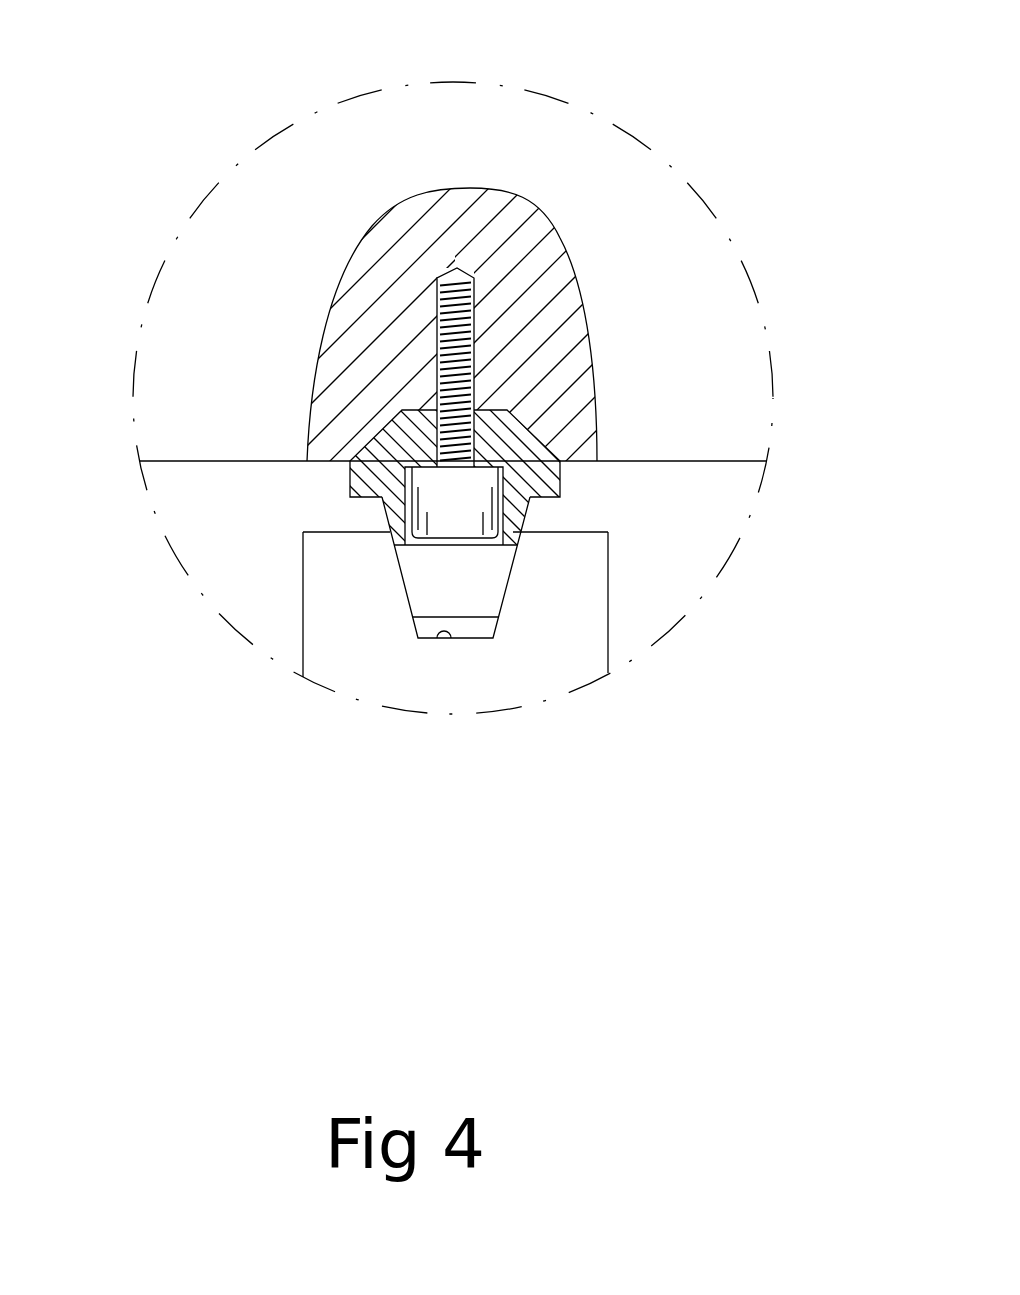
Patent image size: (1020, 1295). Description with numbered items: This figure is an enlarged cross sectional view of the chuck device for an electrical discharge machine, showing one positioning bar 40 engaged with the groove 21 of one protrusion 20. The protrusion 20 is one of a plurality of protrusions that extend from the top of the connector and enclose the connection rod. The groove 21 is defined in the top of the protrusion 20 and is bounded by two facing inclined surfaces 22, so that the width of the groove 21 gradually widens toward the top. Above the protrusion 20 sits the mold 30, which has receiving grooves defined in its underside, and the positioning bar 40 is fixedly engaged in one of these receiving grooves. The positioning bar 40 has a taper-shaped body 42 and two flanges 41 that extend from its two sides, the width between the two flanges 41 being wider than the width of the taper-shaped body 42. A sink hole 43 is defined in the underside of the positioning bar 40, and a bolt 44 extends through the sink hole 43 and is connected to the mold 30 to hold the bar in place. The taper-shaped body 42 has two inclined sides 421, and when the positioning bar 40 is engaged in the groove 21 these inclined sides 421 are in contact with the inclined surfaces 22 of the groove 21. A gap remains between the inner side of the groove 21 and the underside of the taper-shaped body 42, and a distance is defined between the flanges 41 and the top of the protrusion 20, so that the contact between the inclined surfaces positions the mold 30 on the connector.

The protrusion 20 is at (523, 637).
The groove 21 is at (363, 705).
The inclined surface 22 is at (349, 626).
The mold 30 is at (413, 373).
The positioning bar 40 is at (453, 476).
The flange 41 is at (606, 438).
The taper-shaped body 42 is at (282, 567).
The inclined side 421 is at (458, 703).
The sink hole 43 is at (276, 321).
The bolt 44 is at (624, 293).